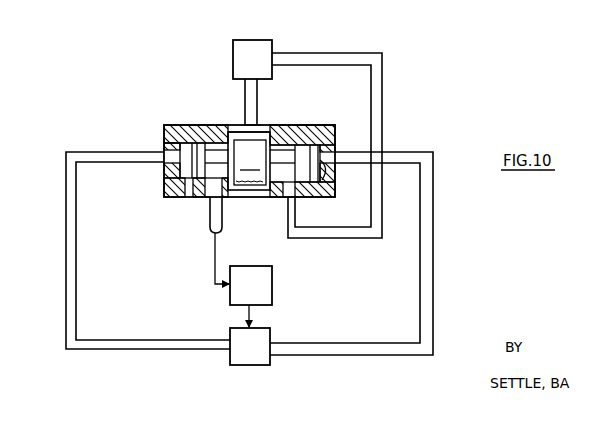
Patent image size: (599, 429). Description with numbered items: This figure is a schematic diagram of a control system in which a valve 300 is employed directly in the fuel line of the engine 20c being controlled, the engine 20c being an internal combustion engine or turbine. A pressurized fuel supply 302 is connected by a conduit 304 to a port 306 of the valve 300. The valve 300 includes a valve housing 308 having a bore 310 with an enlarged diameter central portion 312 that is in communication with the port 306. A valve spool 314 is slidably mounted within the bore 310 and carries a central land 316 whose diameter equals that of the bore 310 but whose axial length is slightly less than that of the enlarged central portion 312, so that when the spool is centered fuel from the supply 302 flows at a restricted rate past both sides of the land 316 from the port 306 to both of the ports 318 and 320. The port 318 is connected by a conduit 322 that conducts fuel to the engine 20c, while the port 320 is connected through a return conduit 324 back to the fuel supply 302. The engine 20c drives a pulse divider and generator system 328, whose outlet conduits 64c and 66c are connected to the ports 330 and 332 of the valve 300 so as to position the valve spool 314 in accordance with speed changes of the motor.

The valve 300 is at (247, 199).
The pressurized fuel supply 302 is at (255, 38).
The conduit 304 is at (258, 99).
The port 306 is at (246, 128).
The valve housing 308 is at (322, 127).
The bore 310 is at (325, 150).
The enlarged diameter central portion 312 is at (236, 128).
The valve spool 314 is at (199, 196).
The central land 316 is at (249, 161).
The port 318 is at (207, 198).
The port 320 is at (290, 204).
The conduit 322 is at (224, 233).
The return conduit 324 is at (382, 107).
The pulse divider and generator system 328 is at (246, 365).
The port 330 is at (166, 152).
The port 332 is at (344, 177).
The engine 20c is at (272, 293).
The outlet conduit 64c is at (77, 327).
The outlet conduit 66c is at (433, 329).